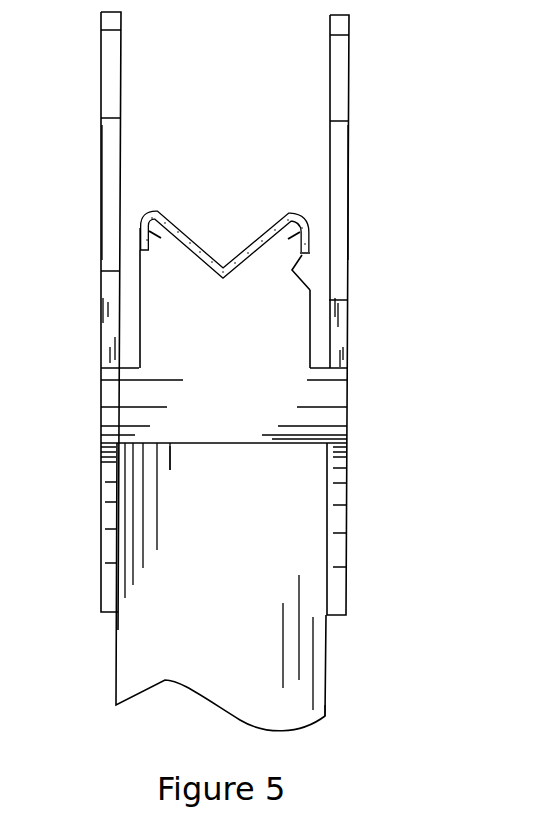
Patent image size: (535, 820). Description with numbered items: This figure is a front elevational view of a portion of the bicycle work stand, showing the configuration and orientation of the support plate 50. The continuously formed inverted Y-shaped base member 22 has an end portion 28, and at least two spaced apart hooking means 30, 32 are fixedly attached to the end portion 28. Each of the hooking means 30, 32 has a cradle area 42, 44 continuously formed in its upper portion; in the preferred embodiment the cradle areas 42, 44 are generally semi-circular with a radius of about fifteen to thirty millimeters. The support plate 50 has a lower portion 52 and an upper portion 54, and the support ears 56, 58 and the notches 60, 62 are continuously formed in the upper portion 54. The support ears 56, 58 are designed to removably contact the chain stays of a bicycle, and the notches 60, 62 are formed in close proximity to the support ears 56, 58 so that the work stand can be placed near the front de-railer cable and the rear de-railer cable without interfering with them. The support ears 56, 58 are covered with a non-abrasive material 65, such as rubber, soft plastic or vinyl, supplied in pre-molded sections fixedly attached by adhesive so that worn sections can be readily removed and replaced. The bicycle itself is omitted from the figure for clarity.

The inverted Y-shaped base member 22 is at (325, 705).
The end portion 28 is at (231, 553).
The hooking means 30 is at (86, 59).
The hooking means 32 is at (366, 60).
The cradle area 42 is at (112, 184).
The cradle area 44 is at (348, 190).
The support plate 50 is at (170, 445).
The lower portion 52 is at (235, 421).
The upper portion 54 is at (234, 328).
The support ear 56 is at (140, 229).
The support ear 58 is at (303, 226).
The notch 60 is at (222, 269).
The notch 62 is at (298, 265).
The non-abrasive material 65 is at (190, 247).